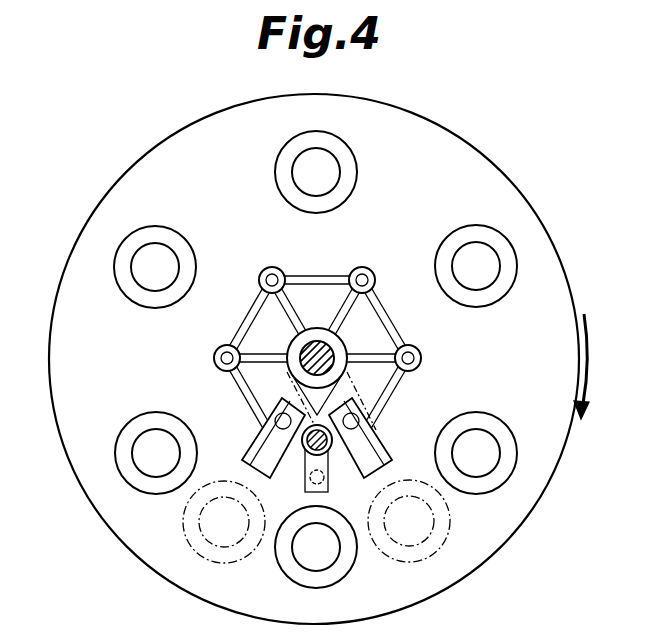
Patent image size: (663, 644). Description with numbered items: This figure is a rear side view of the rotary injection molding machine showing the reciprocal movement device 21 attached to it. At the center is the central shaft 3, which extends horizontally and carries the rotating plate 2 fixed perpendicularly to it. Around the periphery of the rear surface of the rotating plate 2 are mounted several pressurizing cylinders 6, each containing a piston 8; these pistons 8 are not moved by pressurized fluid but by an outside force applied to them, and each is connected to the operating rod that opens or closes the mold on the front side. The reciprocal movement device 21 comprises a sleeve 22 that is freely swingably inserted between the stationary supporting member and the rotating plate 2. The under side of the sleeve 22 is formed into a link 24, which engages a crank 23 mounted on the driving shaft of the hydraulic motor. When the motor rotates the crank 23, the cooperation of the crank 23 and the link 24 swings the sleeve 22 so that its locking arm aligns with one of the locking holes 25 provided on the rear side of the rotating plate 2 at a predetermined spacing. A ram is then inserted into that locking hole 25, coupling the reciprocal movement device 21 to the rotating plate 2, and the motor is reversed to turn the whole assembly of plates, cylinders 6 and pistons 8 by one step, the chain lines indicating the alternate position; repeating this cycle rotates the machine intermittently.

The rotating plate 2 is at (183, 152).
The central shaft 3 is at (317, 340).
The pressurizing cylinder 6 is at (348, 184).
The piston 8 is at (330, 168).
The reciprocal movement device 21 is at (248, 405).
The sleeve 22 is at (296, 343).
The crank 23 is at (302, 466).
The link 24 is at (262, 415).
The locking hole 25 is at (271, 280).